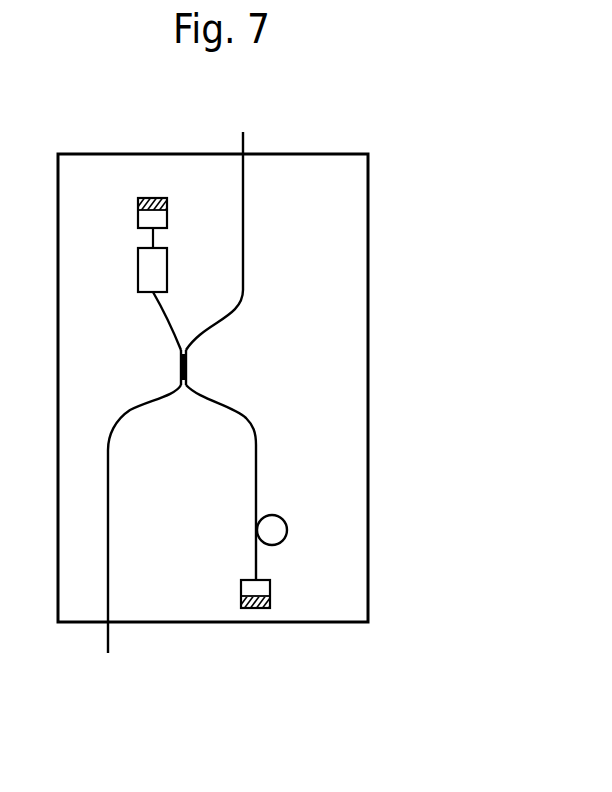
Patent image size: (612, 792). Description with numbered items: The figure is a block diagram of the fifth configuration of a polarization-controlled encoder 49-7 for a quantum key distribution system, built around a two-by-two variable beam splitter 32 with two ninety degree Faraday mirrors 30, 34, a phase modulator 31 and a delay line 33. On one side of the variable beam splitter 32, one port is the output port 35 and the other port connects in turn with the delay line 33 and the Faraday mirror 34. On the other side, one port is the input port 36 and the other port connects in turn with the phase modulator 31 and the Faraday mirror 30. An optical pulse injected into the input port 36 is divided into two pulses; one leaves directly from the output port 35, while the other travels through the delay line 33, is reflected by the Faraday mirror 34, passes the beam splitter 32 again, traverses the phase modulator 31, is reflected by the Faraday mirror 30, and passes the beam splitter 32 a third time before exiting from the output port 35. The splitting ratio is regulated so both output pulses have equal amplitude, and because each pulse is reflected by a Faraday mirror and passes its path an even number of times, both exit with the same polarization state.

The 90 degree Faraday mirror 30 is at (131, 214).
The phase modulator 31 is at (127, 272).
The 2×2 variable beam splitter 32 is at (154, 371).
The delay line 33 is at (247, 531).
The 90 degree Faraday mirror 34 is at (277, 586).
The output port 35 is at (144, 528).
The input port 36 is at (242, 229).
The optical circuit module 49-7 is at (275, 388).